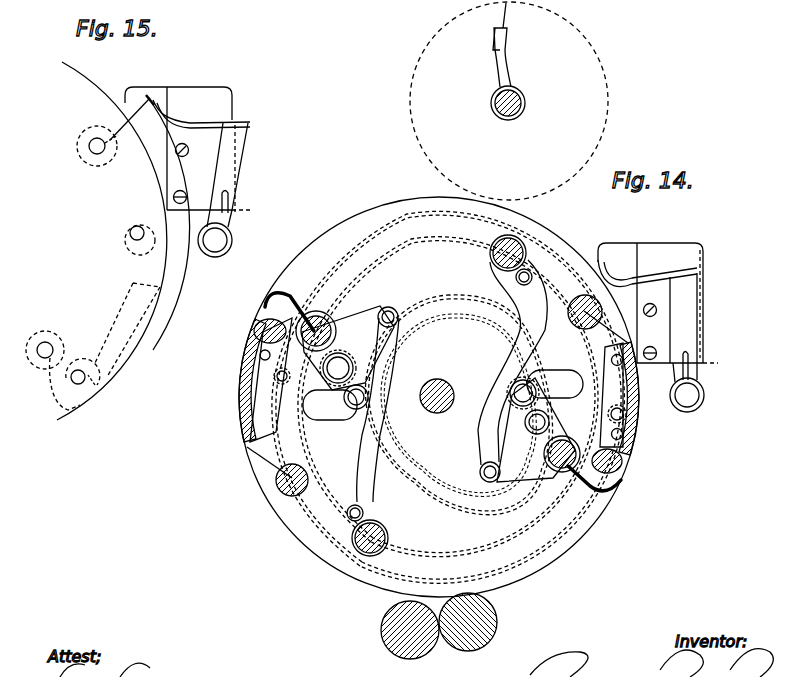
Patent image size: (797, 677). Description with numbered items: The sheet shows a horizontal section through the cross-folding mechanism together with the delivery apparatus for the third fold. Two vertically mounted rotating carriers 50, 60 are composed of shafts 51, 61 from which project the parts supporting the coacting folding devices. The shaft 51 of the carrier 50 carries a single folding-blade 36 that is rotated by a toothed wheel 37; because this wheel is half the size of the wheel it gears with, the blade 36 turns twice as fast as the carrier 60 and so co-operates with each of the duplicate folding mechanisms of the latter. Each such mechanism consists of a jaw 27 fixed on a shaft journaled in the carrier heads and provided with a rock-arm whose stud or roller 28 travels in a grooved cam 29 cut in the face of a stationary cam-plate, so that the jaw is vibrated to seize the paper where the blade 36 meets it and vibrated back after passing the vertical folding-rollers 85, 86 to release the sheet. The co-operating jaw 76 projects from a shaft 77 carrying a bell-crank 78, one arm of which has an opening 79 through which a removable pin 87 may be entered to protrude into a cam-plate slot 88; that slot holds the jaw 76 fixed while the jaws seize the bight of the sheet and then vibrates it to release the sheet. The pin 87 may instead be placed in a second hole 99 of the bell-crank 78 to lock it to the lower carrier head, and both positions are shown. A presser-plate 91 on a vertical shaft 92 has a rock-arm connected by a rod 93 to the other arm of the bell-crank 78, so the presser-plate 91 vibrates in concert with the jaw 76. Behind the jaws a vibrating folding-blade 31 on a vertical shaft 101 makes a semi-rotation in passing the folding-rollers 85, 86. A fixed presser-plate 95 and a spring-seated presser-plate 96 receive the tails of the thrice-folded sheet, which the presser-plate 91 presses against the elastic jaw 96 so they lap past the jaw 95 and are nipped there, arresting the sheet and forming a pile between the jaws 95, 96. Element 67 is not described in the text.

In FIG. 15, the jaw 27 is at (96, 390).
In FIG. 14, the jaw 27 is at (258, 326).
In FIG. 14, the stud or roller 28 is at (443, 395).
In FIG. 14, the grooved cam 29 is at (448, 397).
In FIG. 14, the vibrating folding-blade 31 is at (437, 394).
In FIG. 14, the folding-blade 36 is at (505, 22).
In FIG. 14, the toothed wheel 37 is at (608, 103).
In FIG. 14, the rotating carrier 50 is at (492, 101).
In FIG. 14, the shaft 51 is at (520, 103).
In FIG. 15, the rotating carrier 60 is at (123, 241).
In FIG. 14, the rotating carrier 60 is at (439, 388).
In FIG. 14, the shaft 61 is at (437, 384).
In FIG. 14, the pivot stud 67 is at (338, 368).
In FIG. 15, the co-operating jaw 76 is at (55, 405).
In FIG. 14, the co-operating jaw 76 is at (623, 498).
In FIG. 14, the shaft 77 is at (442, 387).
In FIG. 14, the bell-crank 78 is at (442, 394).
In FIG. 14, the opening 79 is at (356, 397).
In FIG. 14, the vertical folding-roller 85 is at (410, 659).
In FIG. 14, the vertical folding-roller 86 is at (468, 651).
In FIG. 14, the removable pin 87 is at (530, 393).
In FIG. 14, the cam-plate slot 88 is at (458, 410).
In FIG. 15, the presser-plate 91 is at (113, 132).
In FIG. 14, the presser-plate 91 is at (512, 252).
In FIG. 14, the vertical shaft 92 is at (518, 283).
In FIG. 14, the rod 93 is at (452, 381).
In FIG. 15, the fixed presser-plate 95 is at (189, 172).
In FIG. 14, the fixed presser-plate 95 is at (600, 253).
In FIG. 15, the spring-seated presser-plate 96 is at (160, 105).
In FIG. 14, the spring-seated presser-plate 96 is at (607, 272).
In FIG. 14, the second hole 99 is at (537, 422).
In FIG. 14, the vertical shaft 101 is at (292, 464).